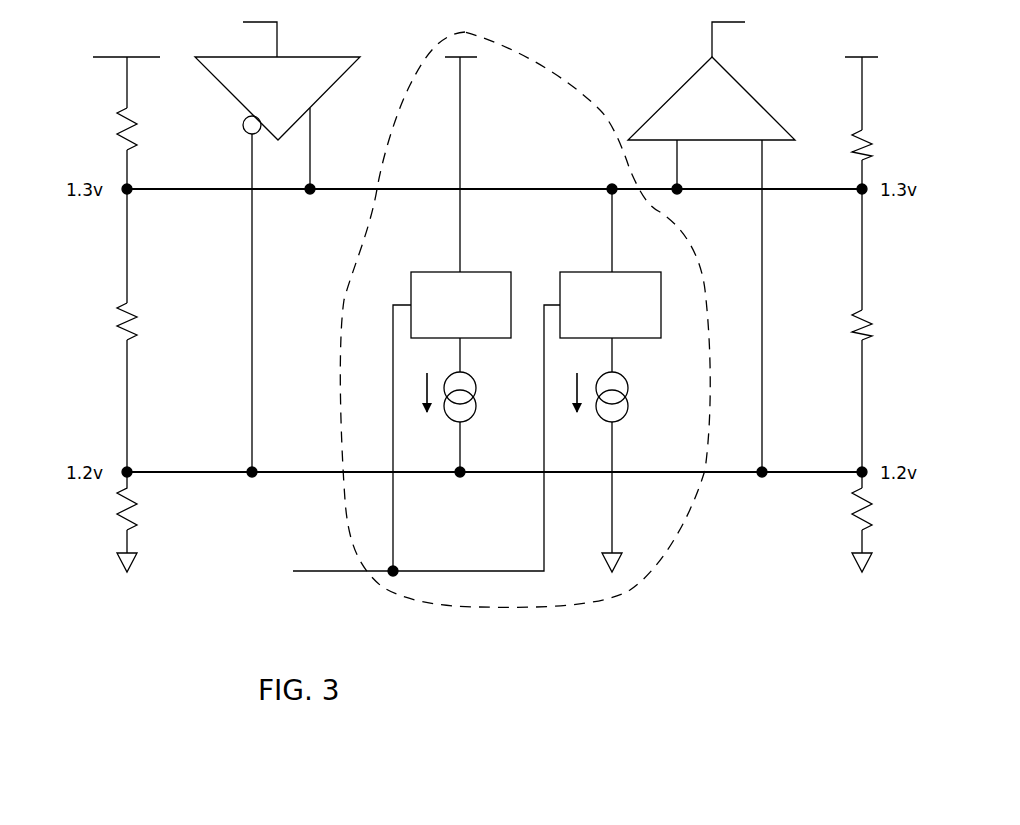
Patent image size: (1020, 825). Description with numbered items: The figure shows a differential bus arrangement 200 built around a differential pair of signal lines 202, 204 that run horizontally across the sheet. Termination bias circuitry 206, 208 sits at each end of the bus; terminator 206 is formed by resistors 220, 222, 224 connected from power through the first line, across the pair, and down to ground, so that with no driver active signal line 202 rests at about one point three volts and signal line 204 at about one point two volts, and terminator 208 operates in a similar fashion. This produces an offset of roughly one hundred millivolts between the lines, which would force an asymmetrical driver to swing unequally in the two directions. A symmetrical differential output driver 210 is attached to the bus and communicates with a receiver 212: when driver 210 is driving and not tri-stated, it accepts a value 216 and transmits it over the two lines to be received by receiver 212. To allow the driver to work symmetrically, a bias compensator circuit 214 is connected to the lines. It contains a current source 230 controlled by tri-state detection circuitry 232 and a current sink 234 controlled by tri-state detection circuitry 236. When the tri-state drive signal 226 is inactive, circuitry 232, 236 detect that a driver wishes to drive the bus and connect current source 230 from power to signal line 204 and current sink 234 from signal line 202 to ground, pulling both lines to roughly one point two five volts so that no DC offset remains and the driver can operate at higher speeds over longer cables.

The differential bus arrangement 200 is at (652, 626).
The signal line 202 is at (165, 195).
The signal line 204 is at (165, 478).
The termination bias circuitry 206 is at (134, 358).
The termination bias circuitry 208 is at (820, 590).
The symmetrical differential output driver 210 is at (242, 85).
The receiver 212 is at (698, 86).
The bias compensator circuit 214 is at (525, 338).
The value 216 is at (279, 38).
The resistor 220 is at (137, 122).
The resistor 222 is at (137, 335).
The resistor 224 is at (137, 510).
The tri-state drive signal 226 is at (333, 575).
The current source 230 is at (470, 420).
The tri-state detection circuitry 232 is at (477, 270).
The current sink 234 is at (622, 420).
The tri-state detection circuitry 236 is at (650, 340).